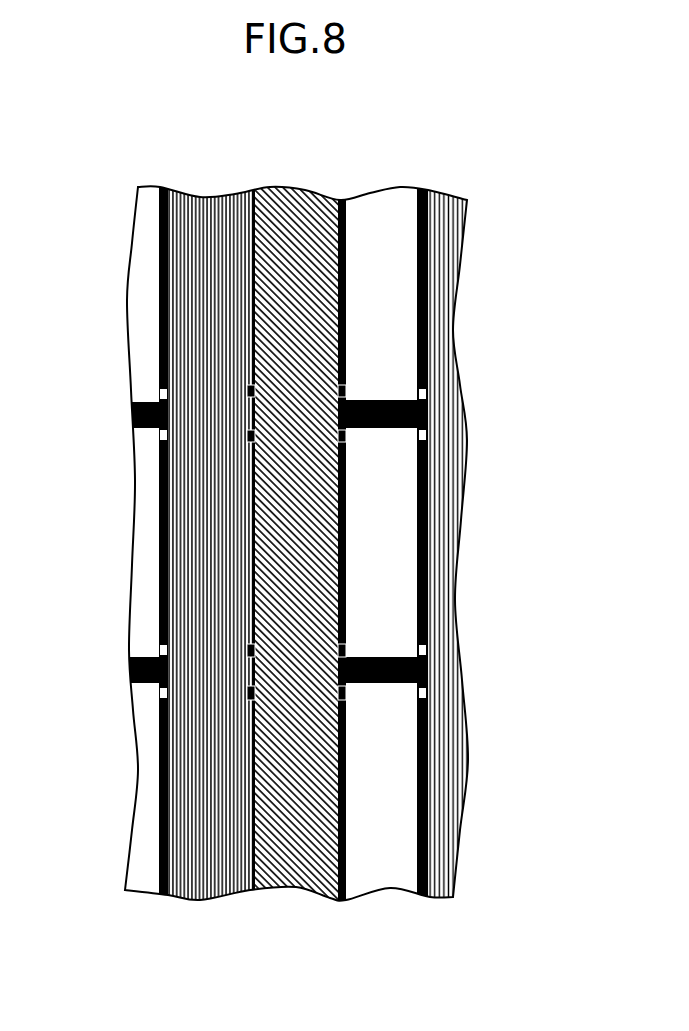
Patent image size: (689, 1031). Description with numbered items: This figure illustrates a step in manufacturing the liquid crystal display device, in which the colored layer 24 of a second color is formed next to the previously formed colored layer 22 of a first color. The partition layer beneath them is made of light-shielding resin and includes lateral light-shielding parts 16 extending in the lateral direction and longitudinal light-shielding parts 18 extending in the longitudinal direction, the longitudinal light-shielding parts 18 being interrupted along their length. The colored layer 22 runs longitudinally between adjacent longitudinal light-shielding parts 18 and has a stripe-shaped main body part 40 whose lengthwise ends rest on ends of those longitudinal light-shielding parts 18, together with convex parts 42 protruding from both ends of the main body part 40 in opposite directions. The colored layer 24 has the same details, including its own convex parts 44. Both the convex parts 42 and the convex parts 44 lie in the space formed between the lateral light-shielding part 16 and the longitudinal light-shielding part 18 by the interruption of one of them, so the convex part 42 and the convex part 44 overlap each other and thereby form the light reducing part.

The lateral light-shielding part 16 is at (140, 414).
The longitudinal light-shielding part 18 is at (163, 197).
The colored layer 22 is at (209, 181).
The colored layer 24 is at (297, 177).
The main body part 40 is at (253, 523).
The convex part 42 is at (162, 398).
The convex part 44 is at (248, 392).